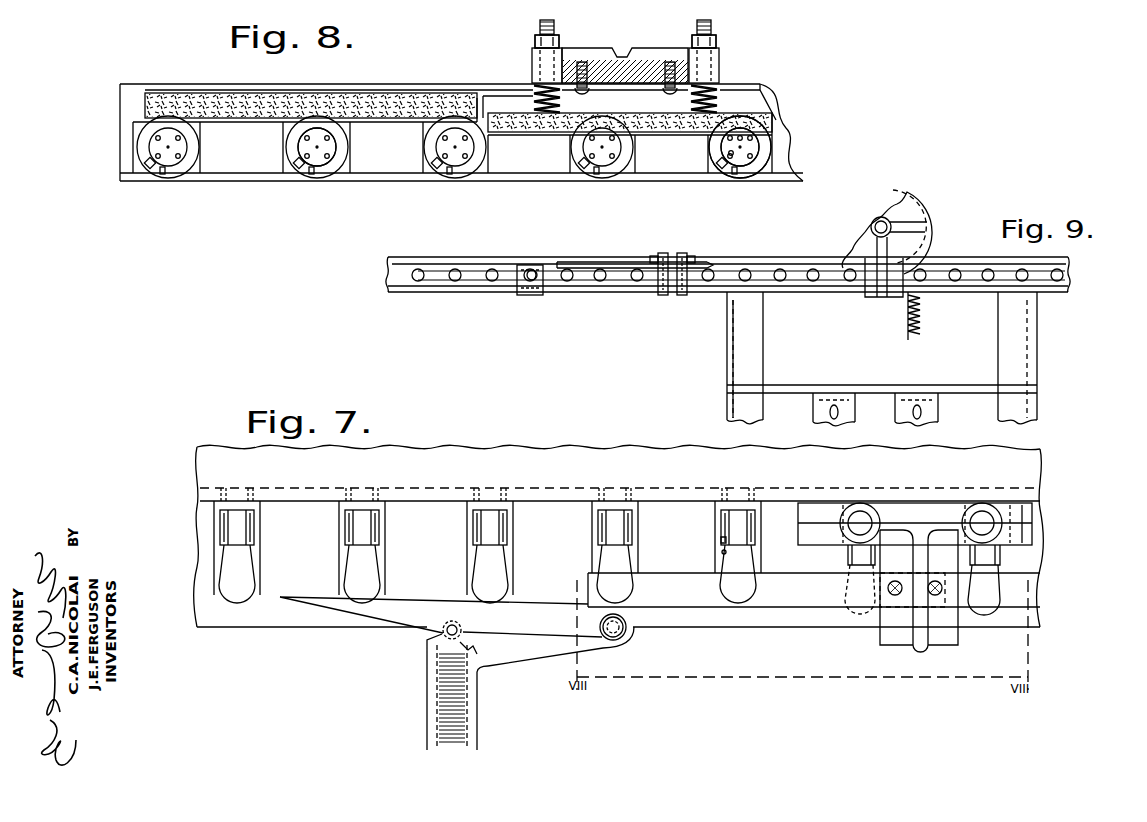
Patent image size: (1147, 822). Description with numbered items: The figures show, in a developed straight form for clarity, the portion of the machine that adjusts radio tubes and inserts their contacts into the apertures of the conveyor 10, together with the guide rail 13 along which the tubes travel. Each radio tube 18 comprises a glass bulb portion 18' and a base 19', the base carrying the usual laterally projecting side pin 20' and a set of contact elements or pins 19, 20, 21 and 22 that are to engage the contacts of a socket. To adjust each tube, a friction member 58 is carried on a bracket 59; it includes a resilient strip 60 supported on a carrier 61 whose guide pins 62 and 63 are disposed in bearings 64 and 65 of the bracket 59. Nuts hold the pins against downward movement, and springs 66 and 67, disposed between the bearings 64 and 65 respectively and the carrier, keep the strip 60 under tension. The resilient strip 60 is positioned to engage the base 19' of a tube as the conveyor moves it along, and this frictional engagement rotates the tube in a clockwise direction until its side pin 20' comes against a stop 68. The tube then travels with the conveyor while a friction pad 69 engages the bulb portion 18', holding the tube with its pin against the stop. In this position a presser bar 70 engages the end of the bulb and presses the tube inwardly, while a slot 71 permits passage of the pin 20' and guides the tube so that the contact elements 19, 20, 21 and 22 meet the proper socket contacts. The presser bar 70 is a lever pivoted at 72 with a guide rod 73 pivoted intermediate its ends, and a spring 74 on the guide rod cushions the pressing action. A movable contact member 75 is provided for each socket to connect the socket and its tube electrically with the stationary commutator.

In FIG. 9, the conveyor 10 is at (790, 253).
In FIG. 9, the rail / guide bar 13 is at (920, 268).
In FIG. 7, the rail / guide bar 13 is at (765, 545).
In FIG. 7, the radio tube 18 is at (487, 545).
In FIG. 8, the bulb portion 18' is at (324, 171).
In FIG. 8, the contact element 19 is at (740, 166).
In FIG. 8, the base 19' is at (769, 147).
In FIG. 8, the contact element 20 is at (788, 147).
In FIG. 8, the side pin 20' is at (483, 166).
In FIG. 7, the side pin 20' is at (702, 555).
In FIG. 8, the contact element 21 is at (729, 153).
In FIG. 8, the contact element 22 is at (737, 140).
In FIG. 8, the friction member 58 is at (752, 53).
In FIG. 8, the bracket 59 is at (640, 48).
In FIG. 9, the bracket 59 is at (674, 258).
In FIG. 7, the bracket 59 is at (945, 626).
In FIG. 8, the resilient strip 60 is at (778, 126).
In FIG. 7, the resilient strip 60 is at (1035, 520).
In FIG. 8, the carrier 61 is at (762, 116).
In FIG. 7, the carrier 61 is at (1021, 506).
In FIG. 8, the guide pin 62 is at (712, 28).
In FIG. 7, the guide pin 62 is at (984, 508).
In FIG. 8, the guide pin 63 is at (540, 30).
In FIG. 7, the guide pin 63 is at (863, 508).
In FIG. 8, the bearing 64 is at (722, 54).
In FIG. 8, the bearing 65 is at (562, 50).
In FIG. 8, the spring 66 is at (719, 94).
In FIG. 8, the spring 67 is at (560, 102).
In FIG. 8, the stop 68 is at (146, 164).
In FIG. 7, the stop 68 is at (720, 540).
In FIG. 8, the friction pad 69 is at (338, 95).
In FIG. 7, the friction pad 69 is at (795, 601).
In FIG. 9, the presser bar 70 is at (550, 284).
In FIG. 7, the presser bar 70 is at (540, 641).
In FIG. 8, the slot 71 is at (164, 176).
In FIG. 7, the pivot 72 is at (616, 642).
In FIG. 7, the guide rod 73 is at (428, 640).
In FIG. 7, the spring 74 is at (466, 710).
In FIG. 9, the movable contact member 75 is at (928, 329).